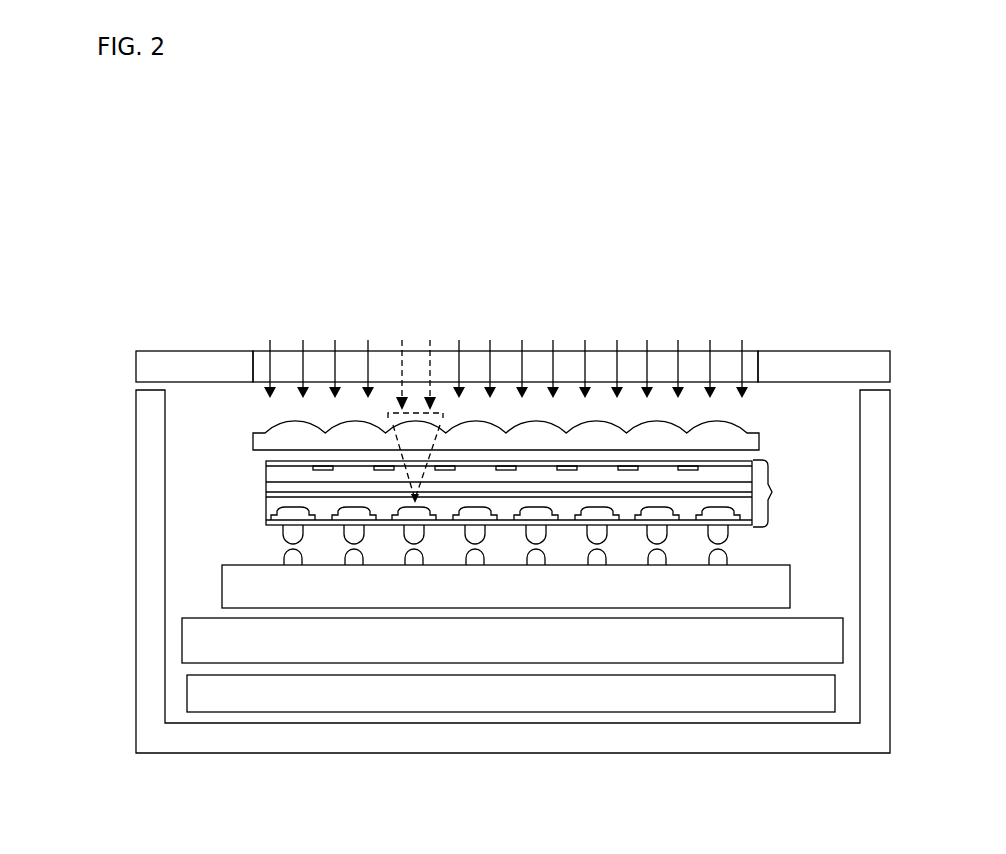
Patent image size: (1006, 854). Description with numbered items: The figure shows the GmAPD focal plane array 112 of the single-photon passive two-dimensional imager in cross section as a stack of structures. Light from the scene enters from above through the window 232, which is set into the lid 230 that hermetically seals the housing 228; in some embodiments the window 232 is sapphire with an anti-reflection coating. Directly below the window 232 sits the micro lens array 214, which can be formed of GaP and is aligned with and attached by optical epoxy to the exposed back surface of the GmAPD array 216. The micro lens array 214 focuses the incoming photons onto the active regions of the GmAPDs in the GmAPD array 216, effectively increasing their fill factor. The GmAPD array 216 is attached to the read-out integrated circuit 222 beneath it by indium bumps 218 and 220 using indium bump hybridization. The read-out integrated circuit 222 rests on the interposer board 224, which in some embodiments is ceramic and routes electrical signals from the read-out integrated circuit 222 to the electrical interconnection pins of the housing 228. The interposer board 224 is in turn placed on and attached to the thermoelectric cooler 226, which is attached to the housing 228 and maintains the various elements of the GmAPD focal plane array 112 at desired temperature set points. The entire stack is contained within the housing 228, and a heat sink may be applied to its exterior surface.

The GmAPD focal plane array 112 is at (222, 246).
The micro lens array 214 is at (743, 427).
The GmAPD array 216 is at (772, 492).
The indium bumps 218 is at (283, 533).
The indium bumps 220 is at (285, 555).
The read-out integrated circuit 222 is at (652, 600).
The interposer board 224 is at (610, 656).
The thermoelectric cooler 226 is at (623, 706).
The housing 228 is at (584, 749).
The lid 230 is at (190, 363).
The window 232 is at (722, 352).